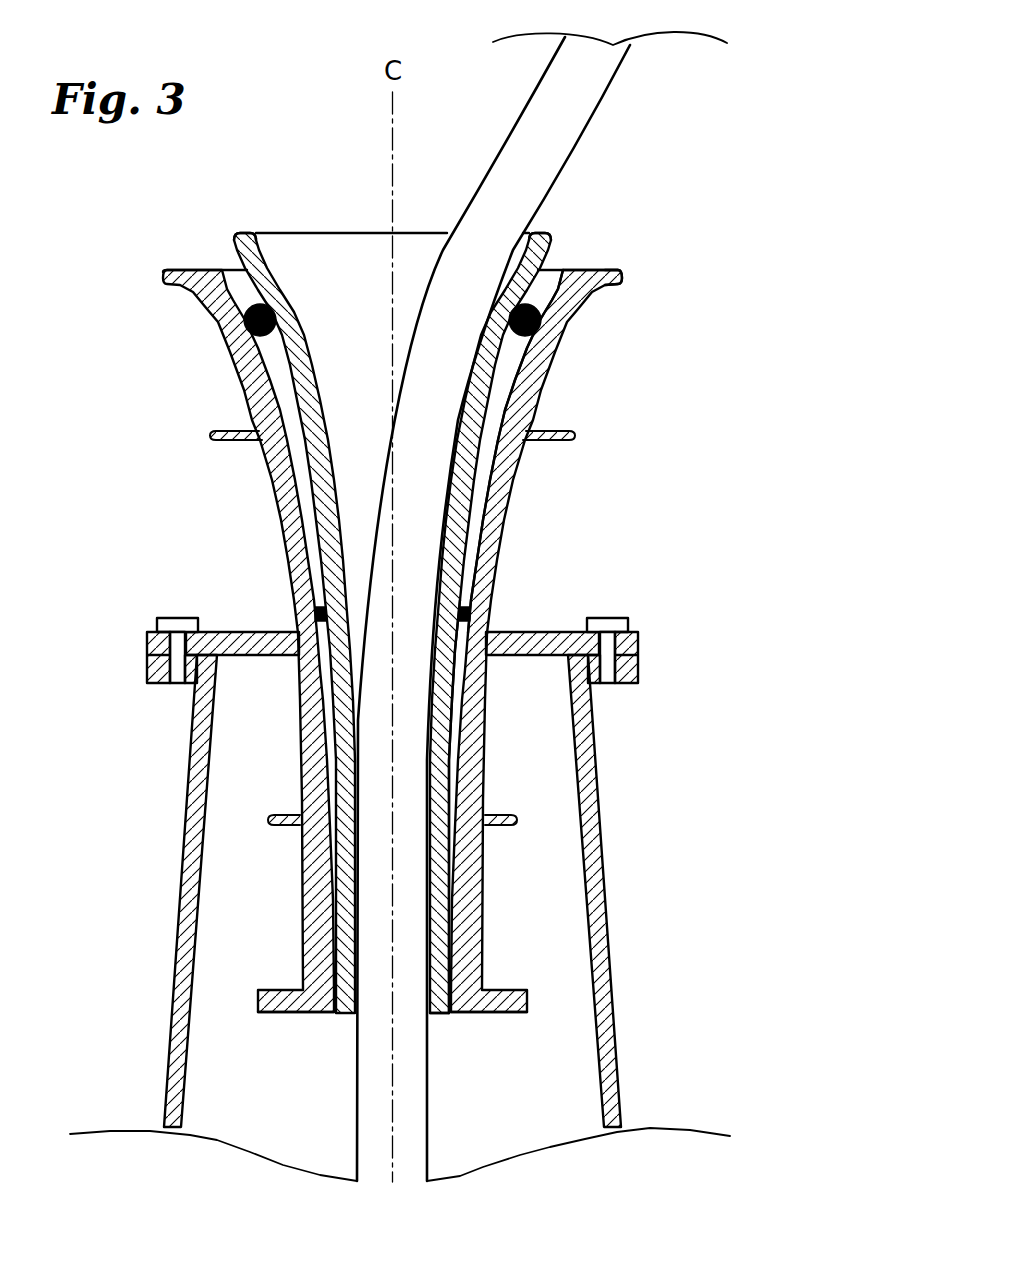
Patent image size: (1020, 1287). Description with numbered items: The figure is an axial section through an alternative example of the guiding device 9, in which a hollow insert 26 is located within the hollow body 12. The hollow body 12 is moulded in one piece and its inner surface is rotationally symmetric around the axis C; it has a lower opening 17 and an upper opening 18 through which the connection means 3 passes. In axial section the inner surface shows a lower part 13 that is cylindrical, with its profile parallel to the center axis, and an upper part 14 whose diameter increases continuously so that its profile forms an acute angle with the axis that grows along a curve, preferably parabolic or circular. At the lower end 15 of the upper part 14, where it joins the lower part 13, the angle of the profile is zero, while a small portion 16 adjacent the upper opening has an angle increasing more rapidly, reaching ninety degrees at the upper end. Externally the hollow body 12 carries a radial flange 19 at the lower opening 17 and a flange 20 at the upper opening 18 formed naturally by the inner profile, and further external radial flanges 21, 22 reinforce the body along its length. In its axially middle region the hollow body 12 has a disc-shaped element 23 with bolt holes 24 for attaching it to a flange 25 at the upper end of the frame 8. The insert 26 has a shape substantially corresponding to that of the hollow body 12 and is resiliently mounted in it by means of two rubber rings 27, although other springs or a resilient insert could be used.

The connection means 3 is at (585, 92).
The frame 8 is at (605, 898).
The guiding device 9 is at (722, 452).
The hollow body 12 is at (488, 552).
The lower part 13 is at (450, 912).
The upper part 14 is at (484, 471).
The lower end 15 is at (452, 860).
The small portion 16 is at (580, 268).
The lower opening 17 is at (443, 1013).
The upper opening 18 is at (217, 270).
The radial flange 19 is at (527, 995).
The flange 20 is at (620, 280).
The external radial flange 21 is at (513, 817).
The external radial flange 22 is at (572, 432).
The disc-shaped element 23 is at (557, 632).
The bolt holes 24 is at (615, 644).
The flange 25 is at (627, 677).
The hollow insert 26 is at (557, 238).
The rubber rings 27 is at (526, 336).